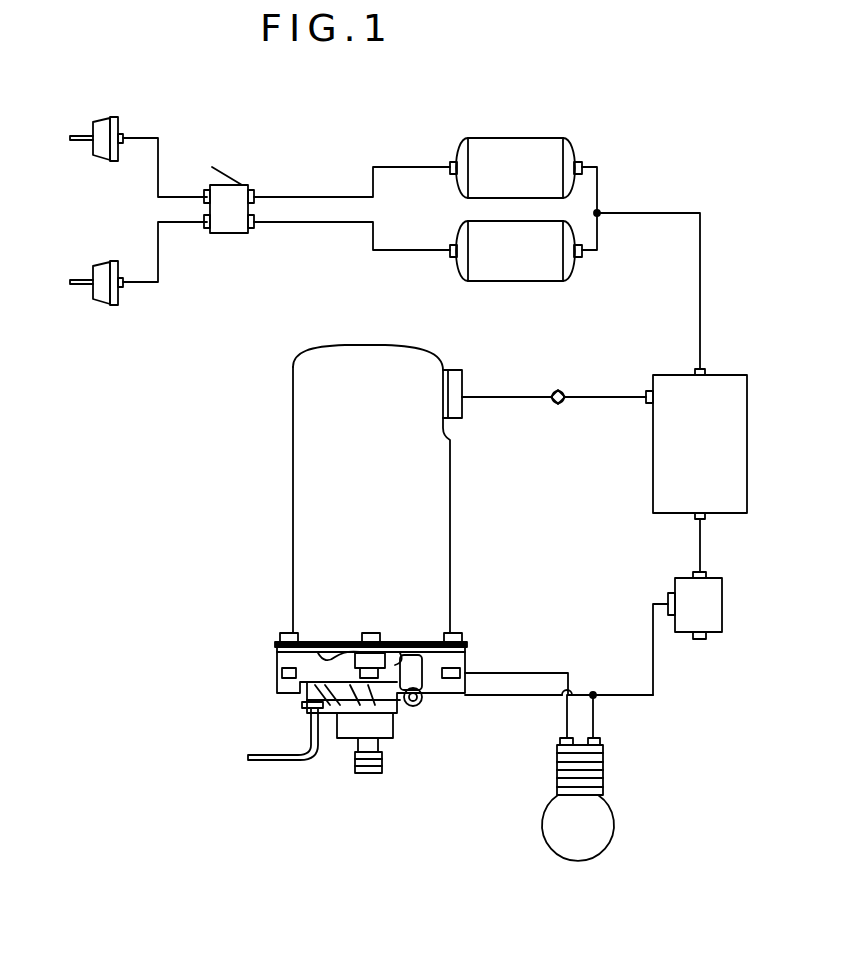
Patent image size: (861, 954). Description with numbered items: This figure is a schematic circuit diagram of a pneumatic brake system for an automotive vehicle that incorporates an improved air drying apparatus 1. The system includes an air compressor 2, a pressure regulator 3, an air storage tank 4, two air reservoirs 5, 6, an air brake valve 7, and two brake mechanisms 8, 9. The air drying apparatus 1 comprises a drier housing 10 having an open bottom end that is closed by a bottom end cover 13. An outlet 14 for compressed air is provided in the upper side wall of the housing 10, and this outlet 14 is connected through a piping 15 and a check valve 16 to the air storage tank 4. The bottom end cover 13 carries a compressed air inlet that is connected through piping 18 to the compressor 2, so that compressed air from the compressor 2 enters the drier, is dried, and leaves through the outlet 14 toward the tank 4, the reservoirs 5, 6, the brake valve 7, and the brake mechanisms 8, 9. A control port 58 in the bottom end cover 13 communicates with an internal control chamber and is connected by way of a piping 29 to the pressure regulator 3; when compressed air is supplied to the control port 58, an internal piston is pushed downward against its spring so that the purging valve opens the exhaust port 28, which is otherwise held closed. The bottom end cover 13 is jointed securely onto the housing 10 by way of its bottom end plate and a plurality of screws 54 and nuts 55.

The air drying apparatus 1 is at (290, 362).
The air compressor 2 is at (600, 841).
The pressure regulator 3 is at (716, 620).
The air storage tank 4 is at (668, 445).
The air reservoir 5 is at (528, 150).
The air reservoir 6 is at (538, 266).
The air brake valve 7 is at (228, 226).
The brake mechanism 8 is at (100, 125).
The brake mechanism 9 is at (101, 291).
The drier housing 10 is at (300, 500).
The bottom end cover 13 is at (440, 680).
The outlet 14 is at (462, 381).
The piping 15 is at (510, 399).
The check valve 16 is at (562, 403).
The piping 18 is at (532, 680).
The exhaust port 28 is at (370, 775).
The piping 29 is at (653, 641).
The screw 54 is at (423, 698).
The nut 55 is at (457, 632).
The control port 58 is at (413, 704).